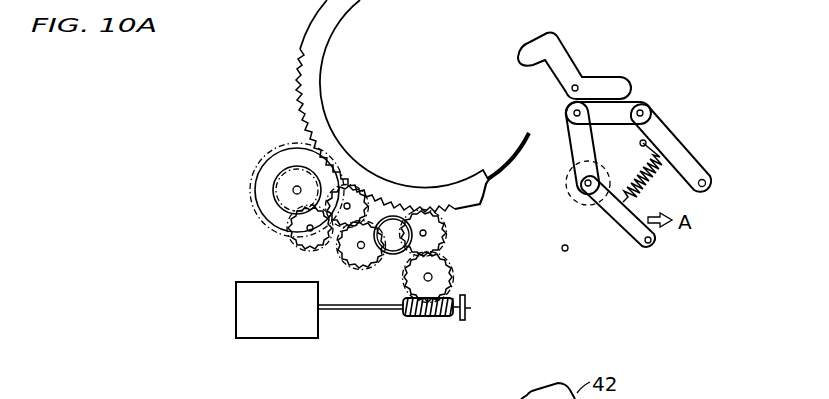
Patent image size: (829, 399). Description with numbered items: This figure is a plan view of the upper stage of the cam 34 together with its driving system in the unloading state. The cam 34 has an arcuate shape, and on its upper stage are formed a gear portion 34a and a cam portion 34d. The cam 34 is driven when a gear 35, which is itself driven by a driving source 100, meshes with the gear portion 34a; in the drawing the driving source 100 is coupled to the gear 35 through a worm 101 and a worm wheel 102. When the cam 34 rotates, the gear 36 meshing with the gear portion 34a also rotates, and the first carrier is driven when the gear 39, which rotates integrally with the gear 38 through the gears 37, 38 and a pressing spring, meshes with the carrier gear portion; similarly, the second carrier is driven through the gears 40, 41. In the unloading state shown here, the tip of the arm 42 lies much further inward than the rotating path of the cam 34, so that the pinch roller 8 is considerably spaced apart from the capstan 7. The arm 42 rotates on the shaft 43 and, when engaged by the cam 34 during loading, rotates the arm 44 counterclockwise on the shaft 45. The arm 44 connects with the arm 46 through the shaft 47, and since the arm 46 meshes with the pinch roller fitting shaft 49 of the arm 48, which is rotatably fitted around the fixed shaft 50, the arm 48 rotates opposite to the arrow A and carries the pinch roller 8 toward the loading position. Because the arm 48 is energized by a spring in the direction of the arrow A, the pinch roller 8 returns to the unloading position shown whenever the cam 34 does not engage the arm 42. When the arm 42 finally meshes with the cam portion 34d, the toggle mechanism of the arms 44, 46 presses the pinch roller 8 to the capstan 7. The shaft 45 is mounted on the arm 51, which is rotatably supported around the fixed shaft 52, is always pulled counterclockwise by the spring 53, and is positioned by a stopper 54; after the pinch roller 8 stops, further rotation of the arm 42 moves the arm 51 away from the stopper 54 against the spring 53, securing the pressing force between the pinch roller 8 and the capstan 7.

The capstan 7 is at (565, 252).
The pinch roller 8 is at (568, 197).
The cam 34 is at (421, 193).
The gear portion 34a is at (300, 97).
The cam portion 34d is at (485, 194).
The gear 35 is at (443, 236).
The gear 36 is at (353, 188).
The gear 37 is at (300, 237).
The gear 38 is at (285, 176).
The gear 39 is at (275, 175).
The gear 40 is at (363, 253).
The gear 41 is at (393, 248).
The arm 42 is at (558, 48).
The shaft 43 is at (578, 80).
The arm 44 is at (622, 117).
The shaft 45 is at (643, 107).
The arm 46 is at (573, 143).
The shaft 47 is at (568, 108).
The arm 48 is at (630, 237).
The pinch roller fitting shaft 49 is at (582, 200).
The fixed shaft 50 is at (653, 247).
The arm 51 is at (666, 128).
The fixed shaft 52 is at (712, 184).
The spring 53 is at (651, 176).
The stopper 54 is at (640, 143).
The driving source 100 is at (290, 331).
The worm 101 is at (430, 318).
The worm wheel 102 is at (445, 284).